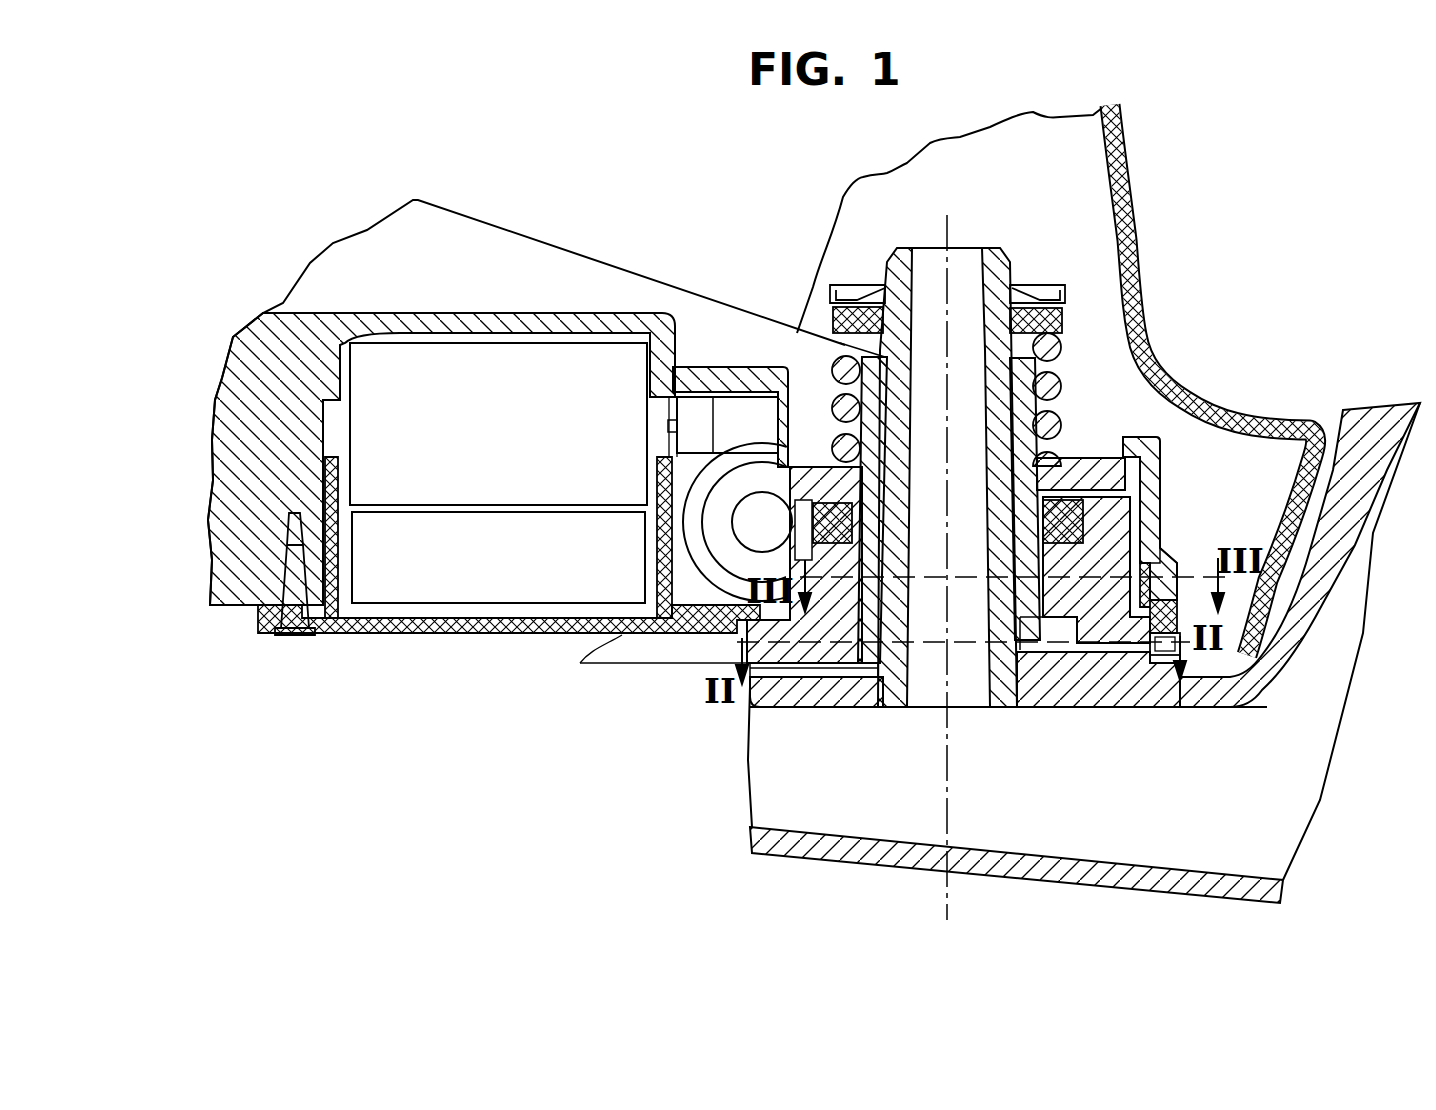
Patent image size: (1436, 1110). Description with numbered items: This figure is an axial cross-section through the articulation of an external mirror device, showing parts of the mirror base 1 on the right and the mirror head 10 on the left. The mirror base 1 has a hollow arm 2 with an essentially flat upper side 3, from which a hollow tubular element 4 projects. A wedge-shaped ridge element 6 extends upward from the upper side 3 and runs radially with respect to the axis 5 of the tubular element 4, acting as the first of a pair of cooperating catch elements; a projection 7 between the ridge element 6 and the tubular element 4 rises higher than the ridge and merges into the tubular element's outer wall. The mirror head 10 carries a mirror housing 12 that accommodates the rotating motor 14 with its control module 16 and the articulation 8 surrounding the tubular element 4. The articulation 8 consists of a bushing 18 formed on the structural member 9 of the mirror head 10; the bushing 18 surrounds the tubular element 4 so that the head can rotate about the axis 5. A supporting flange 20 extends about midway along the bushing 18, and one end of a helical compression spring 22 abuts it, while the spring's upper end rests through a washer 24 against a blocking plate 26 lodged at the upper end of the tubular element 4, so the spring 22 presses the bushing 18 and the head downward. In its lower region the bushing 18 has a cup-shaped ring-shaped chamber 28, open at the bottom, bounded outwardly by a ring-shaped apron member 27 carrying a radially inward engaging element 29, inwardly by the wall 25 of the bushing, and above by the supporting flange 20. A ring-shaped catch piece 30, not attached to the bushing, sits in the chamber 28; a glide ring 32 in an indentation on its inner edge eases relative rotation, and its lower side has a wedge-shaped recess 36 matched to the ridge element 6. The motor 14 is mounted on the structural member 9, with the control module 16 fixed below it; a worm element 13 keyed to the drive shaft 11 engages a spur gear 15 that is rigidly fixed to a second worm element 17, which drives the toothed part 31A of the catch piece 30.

The mirror base 1 is at (1328, 822).
The hollow arm 2 is at (900, 840).
The upper side 3 is at (845, 680).
The tubular element 4 is at (1012, 283).
The axis 5 is at (948, 808).
The ridge element 6 is at (1120, 680).
The projection 7 is at (1047, 680).
The articulation 8 is at (1072, 412).
The structural member 9 is at (540, 313).
The mirror head 10 is at (457, 213).
The drive shaft 11 is at (673, 420).
The mirror housing 12 is at (1133, 162).
The worm element 13 is at (728, 418).
The rotating motor 14 is at (372, 357).
The spur gear 15 is at (718, 558).
The control module 16 is at (613, 583).
The second worm element 17 is at (765, 522).
The bushing 18 is at (865, 490).
The supporting flange 20 is at (1187, 395).
The helical compression spring 22 is at (1060, 347).
The washer 24 is at (813, 290).
The wall 25 is at (1010, 680).
The blocking plate 26 is at (848, 286).
The apron member 27 is at (1158, 550).
The ring-shaped chamber 28 is at (1135, 465).
The engaging element 29 is at (1127, 550).
The catch piece 30 is at (797, 680).
The toothed part 31A is at (795, 497).
The glide ring 32 is at (1040, 487).
The recess 36 is at (1155, 680).